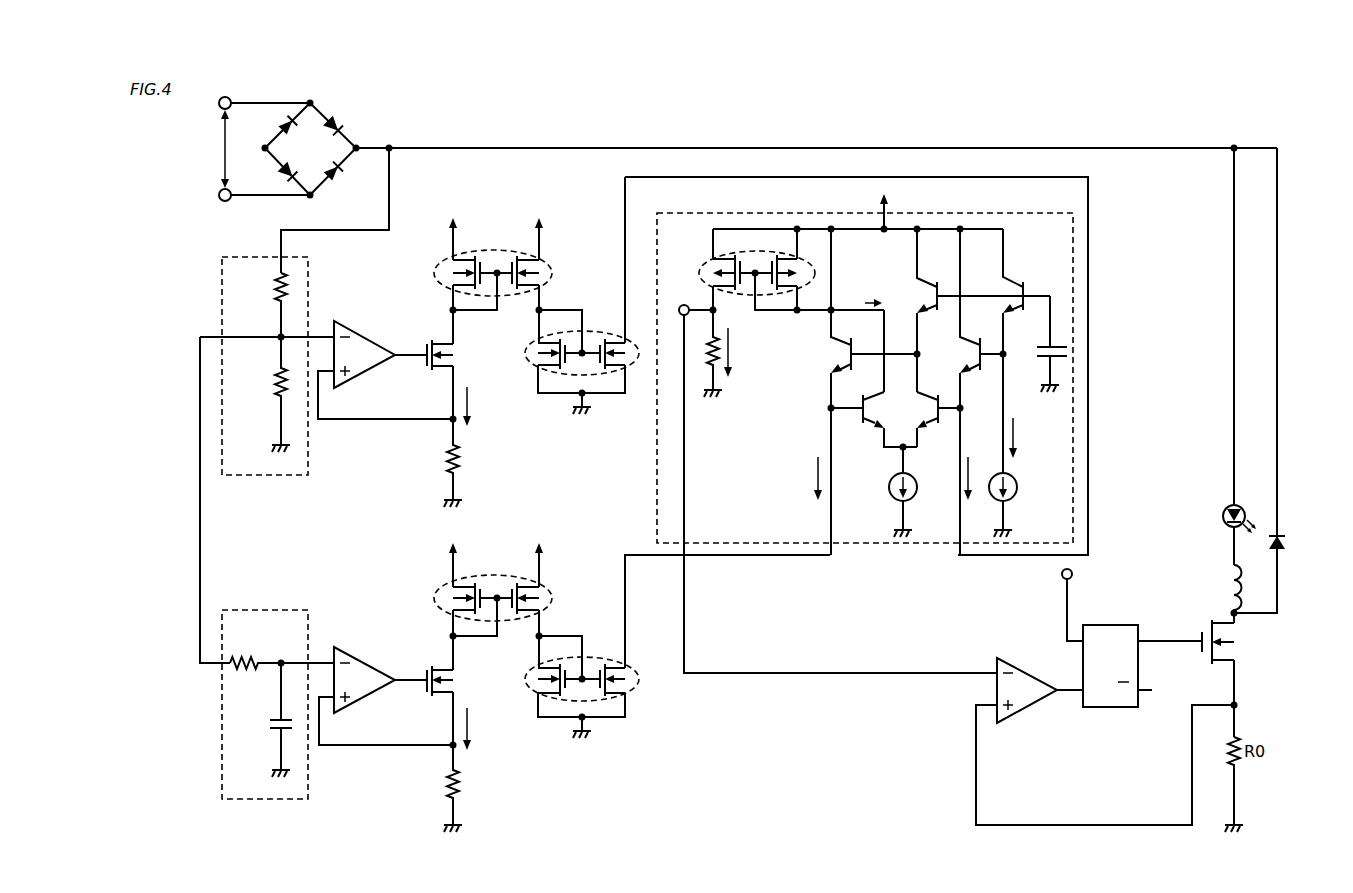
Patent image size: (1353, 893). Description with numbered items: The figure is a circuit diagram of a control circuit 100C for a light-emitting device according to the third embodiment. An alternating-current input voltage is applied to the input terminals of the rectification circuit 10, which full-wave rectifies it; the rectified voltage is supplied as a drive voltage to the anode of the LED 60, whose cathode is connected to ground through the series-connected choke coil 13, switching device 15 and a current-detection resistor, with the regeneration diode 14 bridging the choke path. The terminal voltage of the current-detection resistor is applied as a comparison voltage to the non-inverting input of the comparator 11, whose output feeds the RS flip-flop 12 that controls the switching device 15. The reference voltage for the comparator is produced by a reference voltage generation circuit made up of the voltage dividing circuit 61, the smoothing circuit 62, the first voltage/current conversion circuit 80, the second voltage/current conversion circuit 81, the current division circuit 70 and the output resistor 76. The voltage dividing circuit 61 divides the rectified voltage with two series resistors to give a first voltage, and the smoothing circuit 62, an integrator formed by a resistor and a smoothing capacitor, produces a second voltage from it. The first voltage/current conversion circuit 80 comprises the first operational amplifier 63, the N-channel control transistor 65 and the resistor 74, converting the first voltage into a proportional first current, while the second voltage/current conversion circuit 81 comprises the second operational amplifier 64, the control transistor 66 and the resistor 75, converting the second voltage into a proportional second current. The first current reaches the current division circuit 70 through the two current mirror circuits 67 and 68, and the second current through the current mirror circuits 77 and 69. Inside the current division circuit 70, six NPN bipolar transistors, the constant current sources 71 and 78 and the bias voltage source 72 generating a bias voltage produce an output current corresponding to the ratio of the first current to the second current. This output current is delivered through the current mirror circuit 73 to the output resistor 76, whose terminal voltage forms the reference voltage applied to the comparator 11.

The control circuit 100C is at (892, 136).
The rectification circuit 10 is at (343, 118).
The voltage dividing circuit 61 is at (240, 258).
The smoothing circuit 62 is at (240, 611).
The first operational amplifier 63 is at (376, 332).
The second operational amplifier 64 is at (378, 660).
The control transistor 65 is at (466, 357).
The control transistor 66 is at (466, 682).
The current mirror circuit 67 is at (549, 274).
The current mirror circuit 68 is at (532, 372).
The current mirror circuit 69 is at (636, 696).
The current division circuit 70 is at (887, 368).
The constant current source 71 is at (1022, 488).
The bias voltage source 72 is at (1070, 352).
The current mirror circuit 73 is at (704, 263).
The resistor 74 is at (466, 467).
The resistor 75 is at (466, 792).
The output resistor 76 is at (706, 366).
The current mirror circuit 77 is at (549, 599).
The constant current source 78 is at (880, 488).
The first voltage/current conversion circuit 80 is at (536, 339).
The second voltage/current conversion circuit 81 is at (552, 658).
The comparator 11 is at (1020, 660).
The RS flip-flop 12 is at (1121, 624).
The choke coil 13 is at (1227, 586).
The regeneration diode 14 is at (1290, 547).
The switching device 15 is at (1247, 644).
The LED 60 is at (1222, 514).